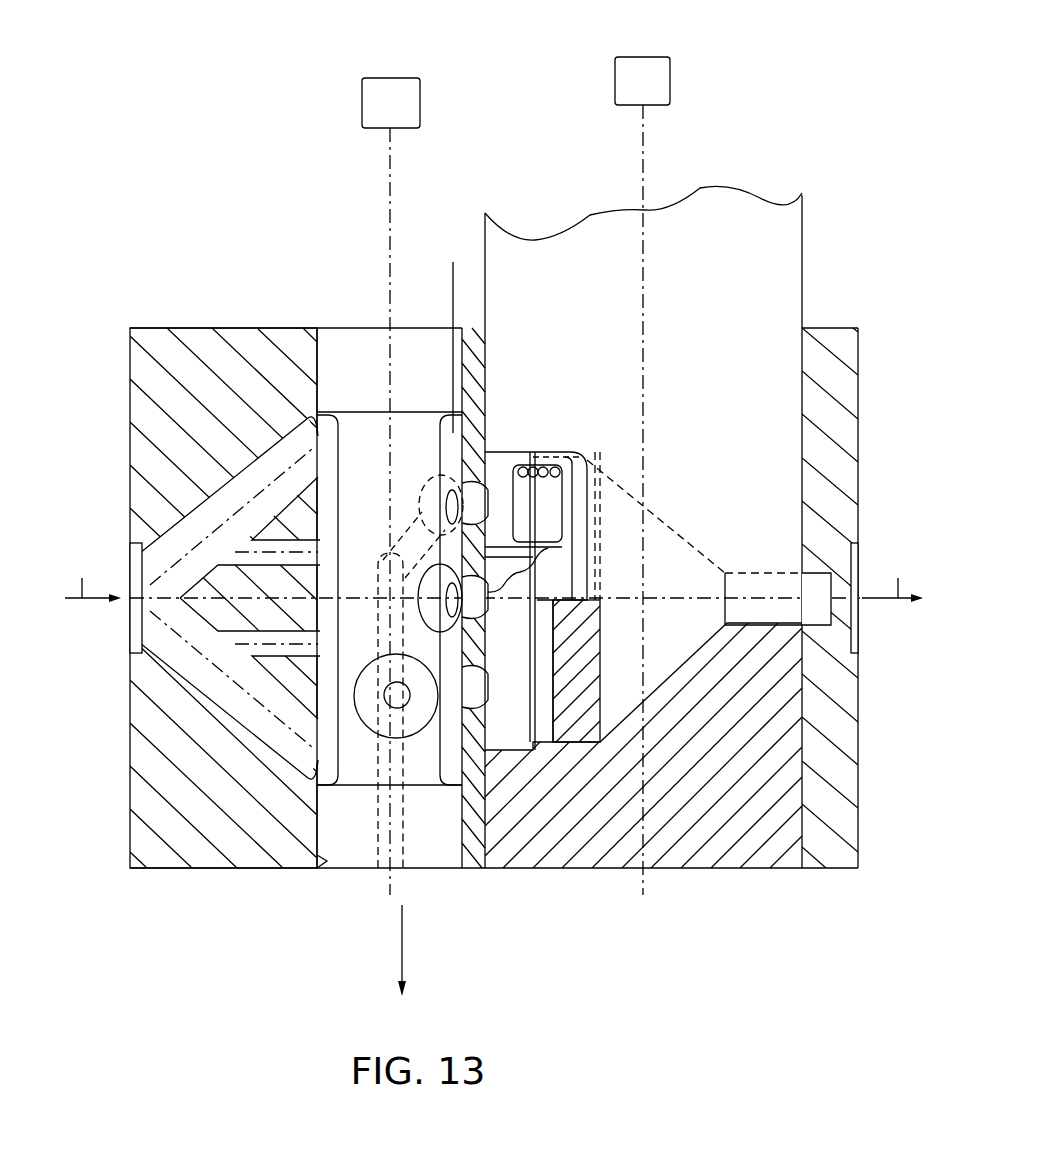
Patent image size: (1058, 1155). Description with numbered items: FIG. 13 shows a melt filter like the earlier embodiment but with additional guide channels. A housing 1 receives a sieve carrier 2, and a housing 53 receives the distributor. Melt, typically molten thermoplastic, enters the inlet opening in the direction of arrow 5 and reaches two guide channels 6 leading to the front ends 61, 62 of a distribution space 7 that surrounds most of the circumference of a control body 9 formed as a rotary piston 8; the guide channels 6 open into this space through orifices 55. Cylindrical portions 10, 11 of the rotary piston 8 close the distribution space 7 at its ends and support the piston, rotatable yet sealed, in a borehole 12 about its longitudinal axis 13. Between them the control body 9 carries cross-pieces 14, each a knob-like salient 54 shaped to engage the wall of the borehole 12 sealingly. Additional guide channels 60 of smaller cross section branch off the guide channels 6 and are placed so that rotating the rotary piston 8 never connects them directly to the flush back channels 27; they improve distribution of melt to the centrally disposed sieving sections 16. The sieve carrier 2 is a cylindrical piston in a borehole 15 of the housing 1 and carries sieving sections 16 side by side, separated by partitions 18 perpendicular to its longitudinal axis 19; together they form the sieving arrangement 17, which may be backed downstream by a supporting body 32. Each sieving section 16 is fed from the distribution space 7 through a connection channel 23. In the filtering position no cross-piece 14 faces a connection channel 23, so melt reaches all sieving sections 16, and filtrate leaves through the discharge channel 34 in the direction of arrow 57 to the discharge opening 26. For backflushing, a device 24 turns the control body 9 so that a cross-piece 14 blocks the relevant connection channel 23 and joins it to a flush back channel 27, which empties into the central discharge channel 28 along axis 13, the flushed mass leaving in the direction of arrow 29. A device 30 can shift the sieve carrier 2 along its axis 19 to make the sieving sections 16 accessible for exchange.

The housing 1 is at (860, 300).
The sieve carrier 2 is at (770, 225).
The arrow 5 is at (103, 595).
The guide channels 6 is at (210, 497).
The distribution space 7 is at (325, 462).
The rotary piston 8 is at (355, 448).
The control body 9 is at (333, 318).
The cylindrical portion 10 is at (406, 381).
The cylindrical portion 11 is at (338, 841).
The borehole 12 is at (318, 865).
The longitudinal axis 13 is at (381, 191).
The cross-pieces 14 is at (425, 615).
The borehole 15 is at (783, 462).
The sieving sections 16 is at (528, 452).
The sieving arrangement 17 is at (556, 447).
The partitions 18 is at (525, 548).
The longitudinal axis 19 is at (648, 300).
The connection channels 23 is at (493, 503).
The device 24 is at (386, 95).
The discharge opening 26 is at (850, 640).
The flush back channel 27 is at (382, 697).
The discharge channel 28 is at (400, 832).
The arrow 29 is at (398, 919).
The device 30 is at (653, 88).
The supporting body 32 is at (570, 625).
The discharge channel 34 is at (770, 580).
The housing 53 is at (170, 320).
The knob-like salient 54 is at (449, 728).
The orifices 55 is at (314, 400).
The arrow 57 is at (898, 570).
The additional guide channels 60 is at (280, 555).
The front end 61 is at (317, 413).
The front end 62 is at (458, 702).